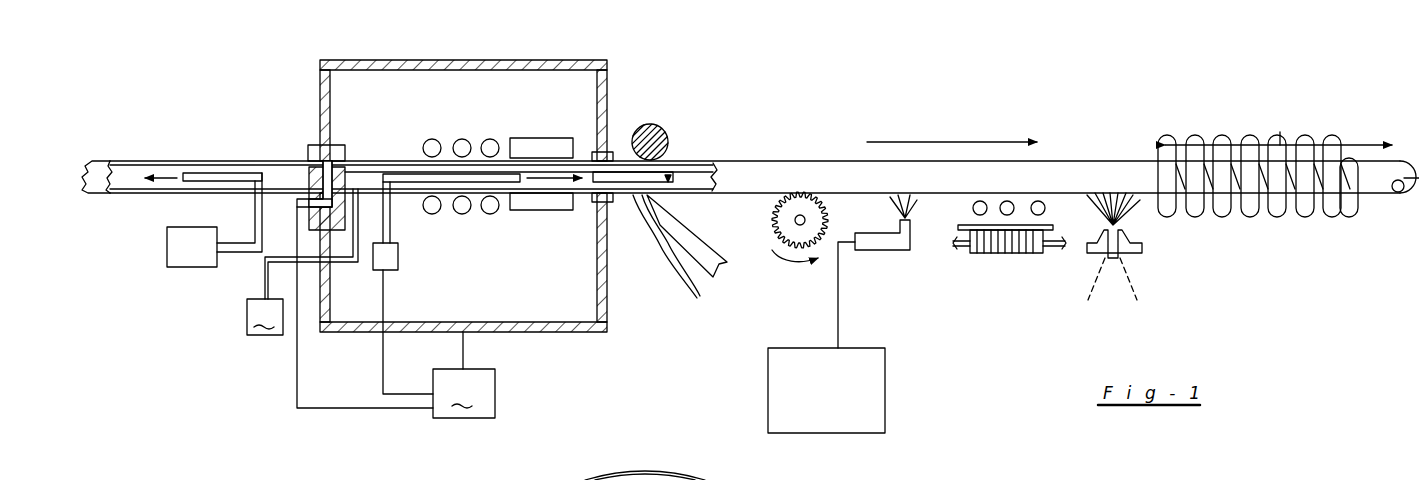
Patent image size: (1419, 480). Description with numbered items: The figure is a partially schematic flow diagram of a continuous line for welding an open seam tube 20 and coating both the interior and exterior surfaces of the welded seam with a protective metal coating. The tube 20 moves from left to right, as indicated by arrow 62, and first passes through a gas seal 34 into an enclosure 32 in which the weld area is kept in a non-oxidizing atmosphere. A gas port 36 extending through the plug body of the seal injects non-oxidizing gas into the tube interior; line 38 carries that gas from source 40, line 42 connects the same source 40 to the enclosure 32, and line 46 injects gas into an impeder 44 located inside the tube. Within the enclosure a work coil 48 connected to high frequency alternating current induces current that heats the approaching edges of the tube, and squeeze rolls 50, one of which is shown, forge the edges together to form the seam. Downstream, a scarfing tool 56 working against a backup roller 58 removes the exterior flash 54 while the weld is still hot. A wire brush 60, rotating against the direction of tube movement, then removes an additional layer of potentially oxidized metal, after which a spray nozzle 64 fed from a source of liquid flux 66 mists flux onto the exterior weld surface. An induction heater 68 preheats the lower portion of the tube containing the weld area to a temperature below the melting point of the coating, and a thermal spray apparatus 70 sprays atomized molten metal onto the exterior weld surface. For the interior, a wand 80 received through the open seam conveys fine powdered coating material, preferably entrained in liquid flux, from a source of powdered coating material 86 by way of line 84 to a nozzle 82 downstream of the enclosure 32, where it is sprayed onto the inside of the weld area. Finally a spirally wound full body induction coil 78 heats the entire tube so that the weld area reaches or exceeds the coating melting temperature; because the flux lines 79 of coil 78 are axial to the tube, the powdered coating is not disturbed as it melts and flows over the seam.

The open seam tube 20 is at (168, 148).
The enclosure 32 is at (320, 70).
The gas seal 34 is at (313, 148).
The gas port 36 is at (333, 153).
The line 38 is at (297, 368).
The source of non-oxidizing gas 40 is at (464, 393).
The line 42 is at (463, 352).
The impeder 44 is at (387, 244).
The line 46 is at (382, 366).
The work coil 48 is at (462, 139).
The squeeze rolls 50 is at (543, 138).
The outer flash 54 is at (665, 258).
The scarfing tool 56 is at (710, 258).
The backup roller 58 is at (651, 124).
The wire brush 60 is at (780, 233).
The arrow 62 is at (953, 142).
The spray nozzle 64 is at (907, 232).
The source of liquid flux 66 is at (885, 392).
The induction heater 68 is at (1010, 245).
The thermal spray apparatus 70 is at (1154, 250).
The induction coil 78 is at (1252, 137).
The flux lines 79 is at (1280, 142).
The wand 80 is at (597, 173).
The nozzle 82 is at (670, 178).
The line 84 is at (255, 218).
The source of powdered coating material 86 is at (302, 262).